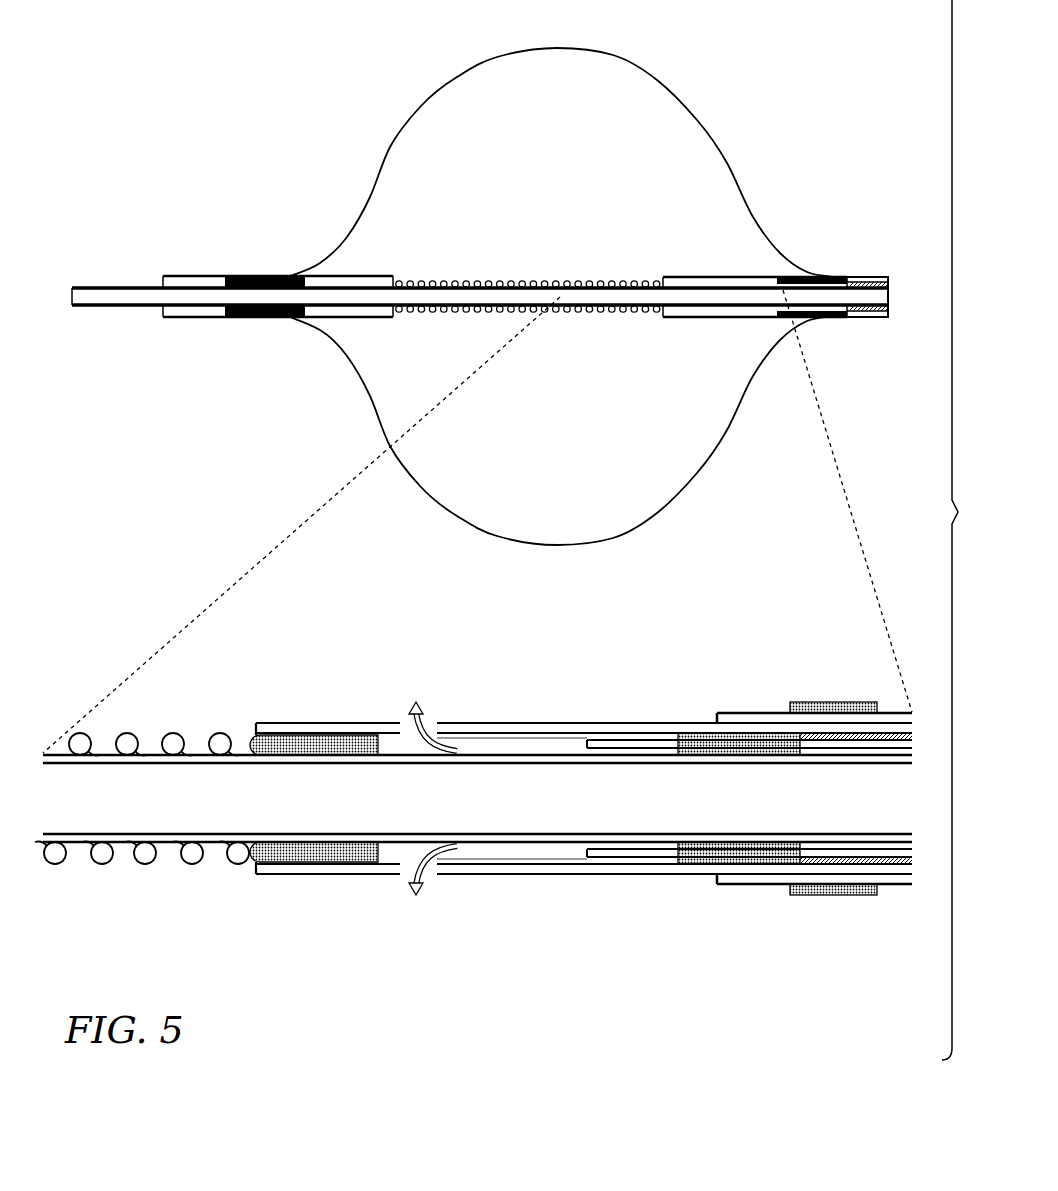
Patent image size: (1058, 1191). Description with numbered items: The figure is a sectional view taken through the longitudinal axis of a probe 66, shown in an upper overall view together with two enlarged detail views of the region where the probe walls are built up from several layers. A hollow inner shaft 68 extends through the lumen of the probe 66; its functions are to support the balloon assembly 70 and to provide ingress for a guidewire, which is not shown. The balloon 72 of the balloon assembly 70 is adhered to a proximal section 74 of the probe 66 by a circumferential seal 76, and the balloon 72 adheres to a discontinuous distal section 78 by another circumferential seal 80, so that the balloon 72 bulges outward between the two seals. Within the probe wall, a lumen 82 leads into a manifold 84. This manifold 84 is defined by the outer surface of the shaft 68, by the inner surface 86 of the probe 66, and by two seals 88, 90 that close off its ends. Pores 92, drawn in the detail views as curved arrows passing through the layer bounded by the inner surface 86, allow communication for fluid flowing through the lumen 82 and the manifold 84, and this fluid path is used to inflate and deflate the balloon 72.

The probe 66 is at (855, 240).
The hollow inner shaft 68 is at (106, 286).
The balloon assembly 70 is at (561, 288).
The balloon 72 is at (422, 110).
The proximal section 74 is at (876, 318).
The circumferential seal 76 is at (802, 274).
The discontinuous distal section 78 is at (203, 320).
The circumferential seal 80 is at (246, 276).
The lumen 82 is at (618, 738).
The manifold 84 is at (526, 740).
The inner surface 86 is at (470, 728).
The seal 88 is at (690, 733).
The seal 90 is at (312, 734).
The pores 92 is at (399, 722).